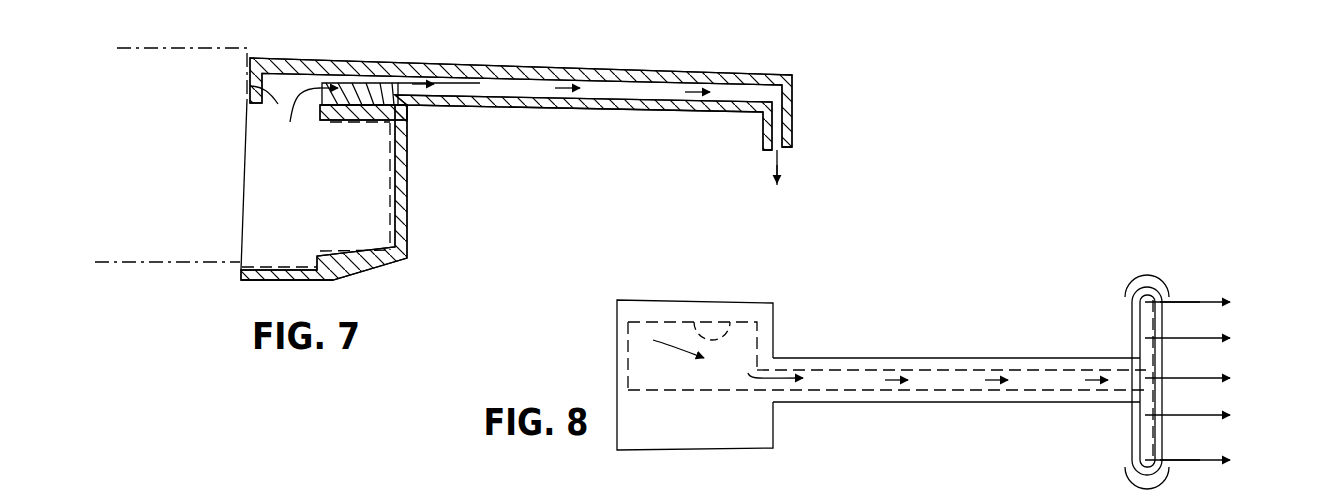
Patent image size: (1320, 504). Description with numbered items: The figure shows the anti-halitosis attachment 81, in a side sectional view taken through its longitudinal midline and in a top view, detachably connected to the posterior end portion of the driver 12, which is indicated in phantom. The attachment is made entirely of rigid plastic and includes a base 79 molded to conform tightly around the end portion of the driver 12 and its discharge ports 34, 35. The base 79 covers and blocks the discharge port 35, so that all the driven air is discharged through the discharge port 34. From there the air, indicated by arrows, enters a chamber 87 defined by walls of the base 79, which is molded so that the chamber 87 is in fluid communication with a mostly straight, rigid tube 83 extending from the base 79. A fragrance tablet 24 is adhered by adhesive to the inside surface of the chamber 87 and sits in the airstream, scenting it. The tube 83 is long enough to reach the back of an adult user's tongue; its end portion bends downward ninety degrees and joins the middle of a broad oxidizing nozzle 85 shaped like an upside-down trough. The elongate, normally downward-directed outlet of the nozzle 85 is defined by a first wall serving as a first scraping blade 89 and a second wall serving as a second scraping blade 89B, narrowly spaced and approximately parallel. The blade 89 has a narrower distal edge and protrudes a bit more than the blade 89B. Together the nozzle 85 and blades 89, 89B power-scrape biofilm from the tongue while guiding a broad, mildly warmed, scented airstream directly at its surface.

In FIG. 7, the driver 12 is at (113, 266).
In FIG. 7, the fragrance tablet 24 is at (366, 102).
In FIG. 7, the discharge port 34 is at (250, 86).
In FIG. 7, the discharge port 35 is at (270, 279).
In FIG. 7, the base 79 is at (408, 148).
In FIG. 7, the anti-halitosis attachment 81 is at (409, 196).
In FIG. 8, the anti-halitosis attachment 81 is at (779, 328).
In FIG. 7, the tube 83 is at (497, 65).
In FIG. 8, the tube 83 is at (930, 403).
In FIG. 7, the oxidizing nozzle 85 is at (793, 138).
In FIG. 8, the oxidizing nozzle 85 is at (1137, 332).
In FIG. 7, the chamber 87 is at (300, 85).
In FIG. 8, the chamber 87 is at (733, 320).
In FIG. 7, the first scraping blade 89 is at (765, 143).
In FIG. 8, the first scraping blade 89 is at (1137, 313).
In FIG. 7, the second scraping blade 89B is at (788, 147).
In FIG. 8, the second scraping blade 89B is at (1160, 330).